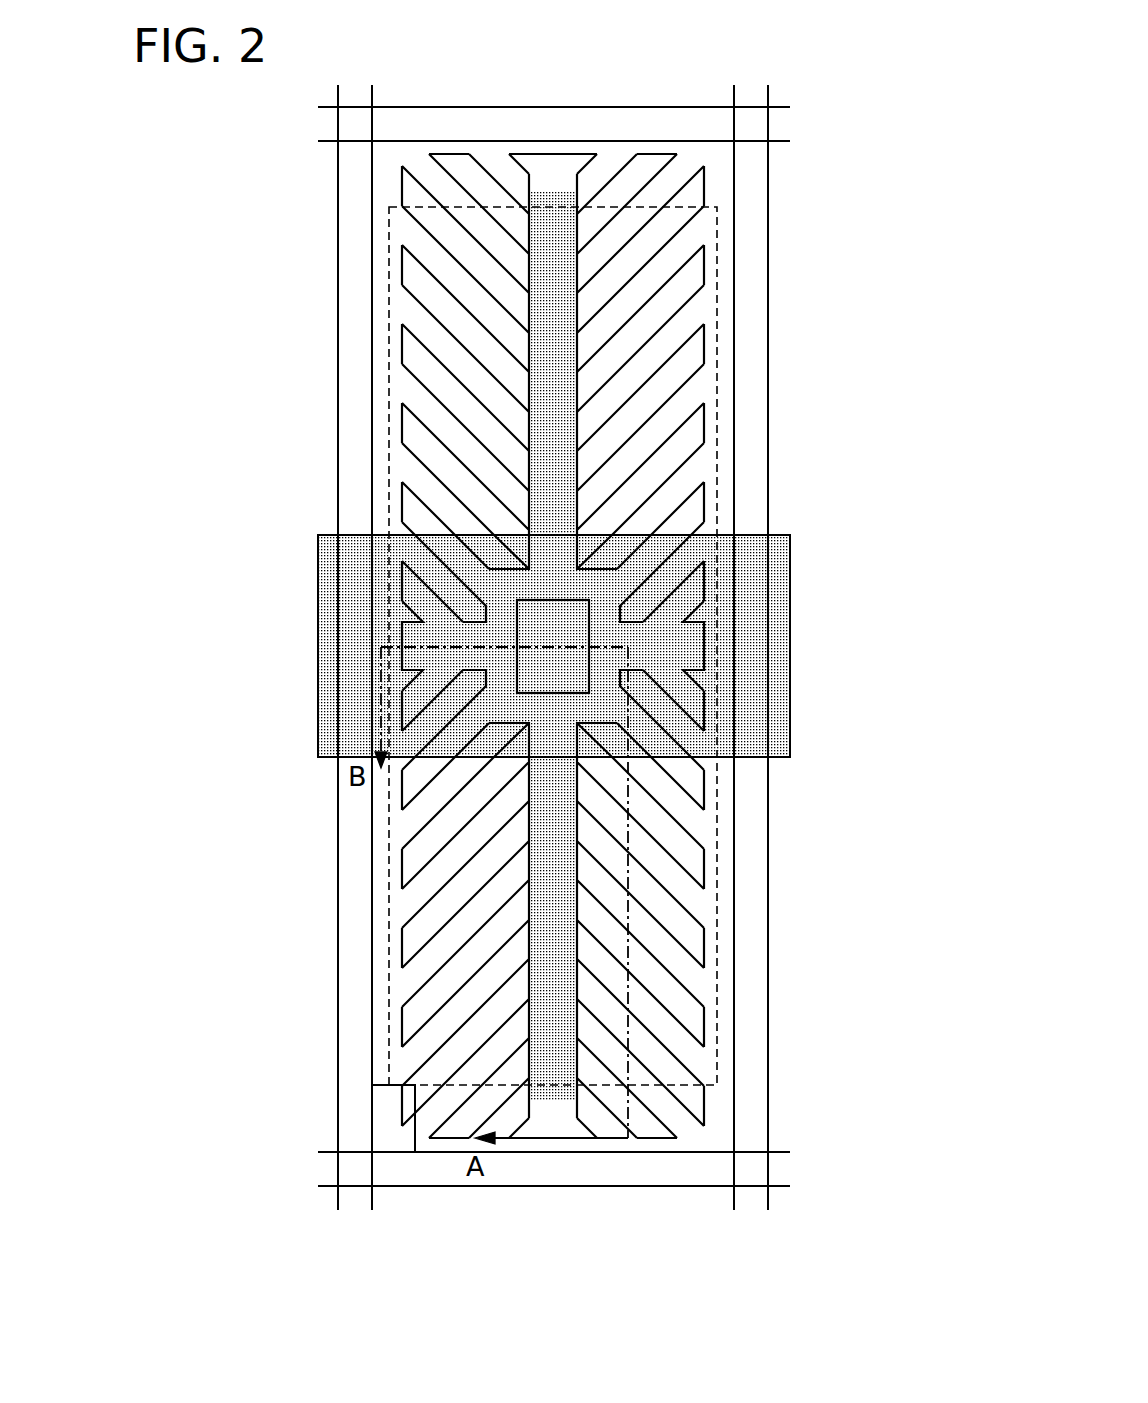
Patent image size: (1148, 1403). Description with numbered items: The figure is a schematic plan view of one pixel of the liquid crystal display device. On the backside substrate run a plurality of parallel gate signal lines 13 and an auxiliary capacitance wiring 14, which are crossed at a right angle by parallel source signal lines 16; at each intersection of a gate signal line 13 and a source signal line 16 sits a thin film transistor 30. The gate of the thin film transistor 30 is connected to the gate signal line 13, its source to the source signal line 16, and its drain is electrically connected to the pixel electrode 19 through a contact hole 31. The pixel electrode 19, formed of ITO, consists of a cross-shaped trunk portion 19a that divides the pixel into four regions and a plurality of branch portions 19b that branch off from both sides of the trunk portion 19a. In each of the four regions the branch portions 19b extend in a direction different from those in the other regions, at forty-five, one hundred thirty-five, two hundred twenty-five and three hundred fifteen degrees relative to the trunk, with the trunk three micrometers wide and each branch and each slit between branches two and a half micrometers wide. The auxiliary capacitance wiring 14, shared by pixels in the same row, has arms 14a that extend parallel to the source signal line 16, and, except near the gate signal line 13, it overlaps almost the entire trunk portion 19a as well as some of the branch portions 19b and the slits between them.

The gate signal line 13 is at (778, 122).
The source signal line 16 is at (755, 378).
The auxiliary capacitance wiring 14 is at (597, 646).
The arm 14a is at (557, 885).
The pixel electrode 19 is at (659, 646).
The trunk portion 19a is at (680, 652).
The branch portion 19b is at (690, 788).
The contact hole 31 is at (570, 618).
The thin film transistor 30 is at (390, 1137).